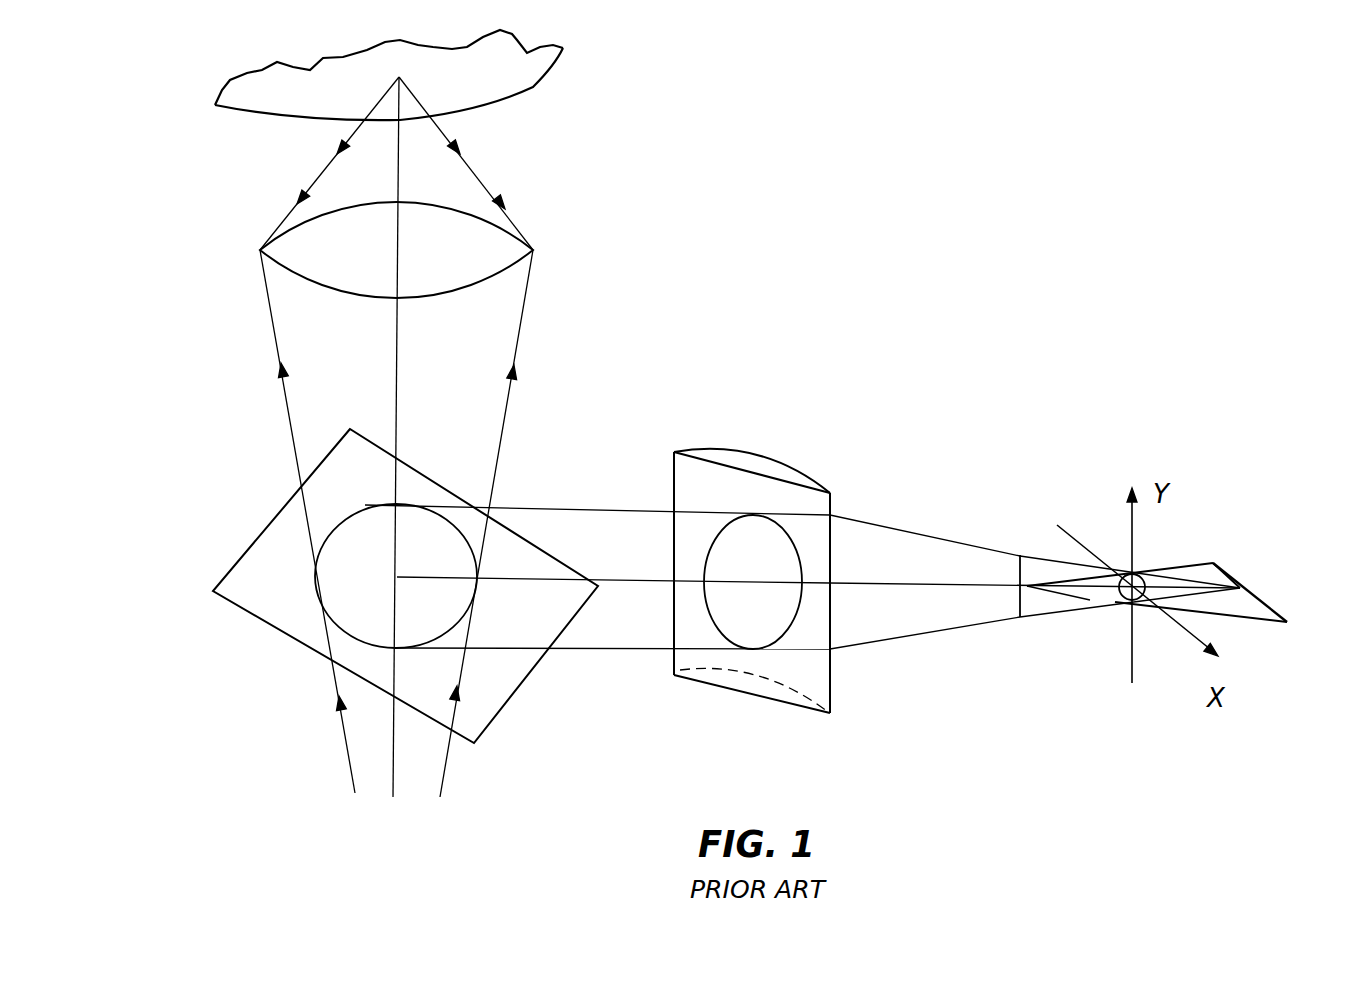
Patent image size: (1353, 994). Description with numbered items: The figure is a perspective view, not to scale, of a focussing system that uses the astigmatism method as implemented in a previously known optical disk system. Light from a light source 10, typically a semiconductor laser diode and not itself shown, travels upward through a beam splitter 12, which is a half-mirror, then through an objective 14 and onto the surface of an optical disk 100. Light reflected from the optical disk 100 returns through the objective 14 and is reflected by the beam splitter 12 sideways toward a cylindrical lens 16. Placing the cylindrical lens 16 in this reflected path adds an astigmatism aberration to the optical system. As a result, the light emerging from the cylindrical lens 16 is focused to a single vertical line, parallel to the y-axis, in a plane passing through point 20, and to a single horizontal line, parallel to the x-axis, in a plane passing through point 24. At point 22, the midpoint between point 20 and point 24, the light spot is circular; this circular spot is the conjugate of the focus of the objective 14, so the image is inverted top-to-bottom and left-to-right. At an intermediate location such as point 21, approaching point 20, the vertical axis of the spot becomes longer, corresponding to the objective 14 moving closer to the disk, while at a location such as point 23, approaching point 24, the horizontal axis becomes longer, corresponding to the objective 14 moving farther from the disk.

The light source 10 is at (406, 468).
The beam splitter 12 is at (281, 598).
The objective 14 is at (474, 260).
The cylindrical lens 16 is at (797, 465).
The point 20 is at (1007, 600).
The point 21 is at (1070, 590).
The point 22 is at (1113, 595).
The point 23 is at (1207, 580).
The point 24 is at (1250, 618).
The optical disk 100 is at (508, 87).